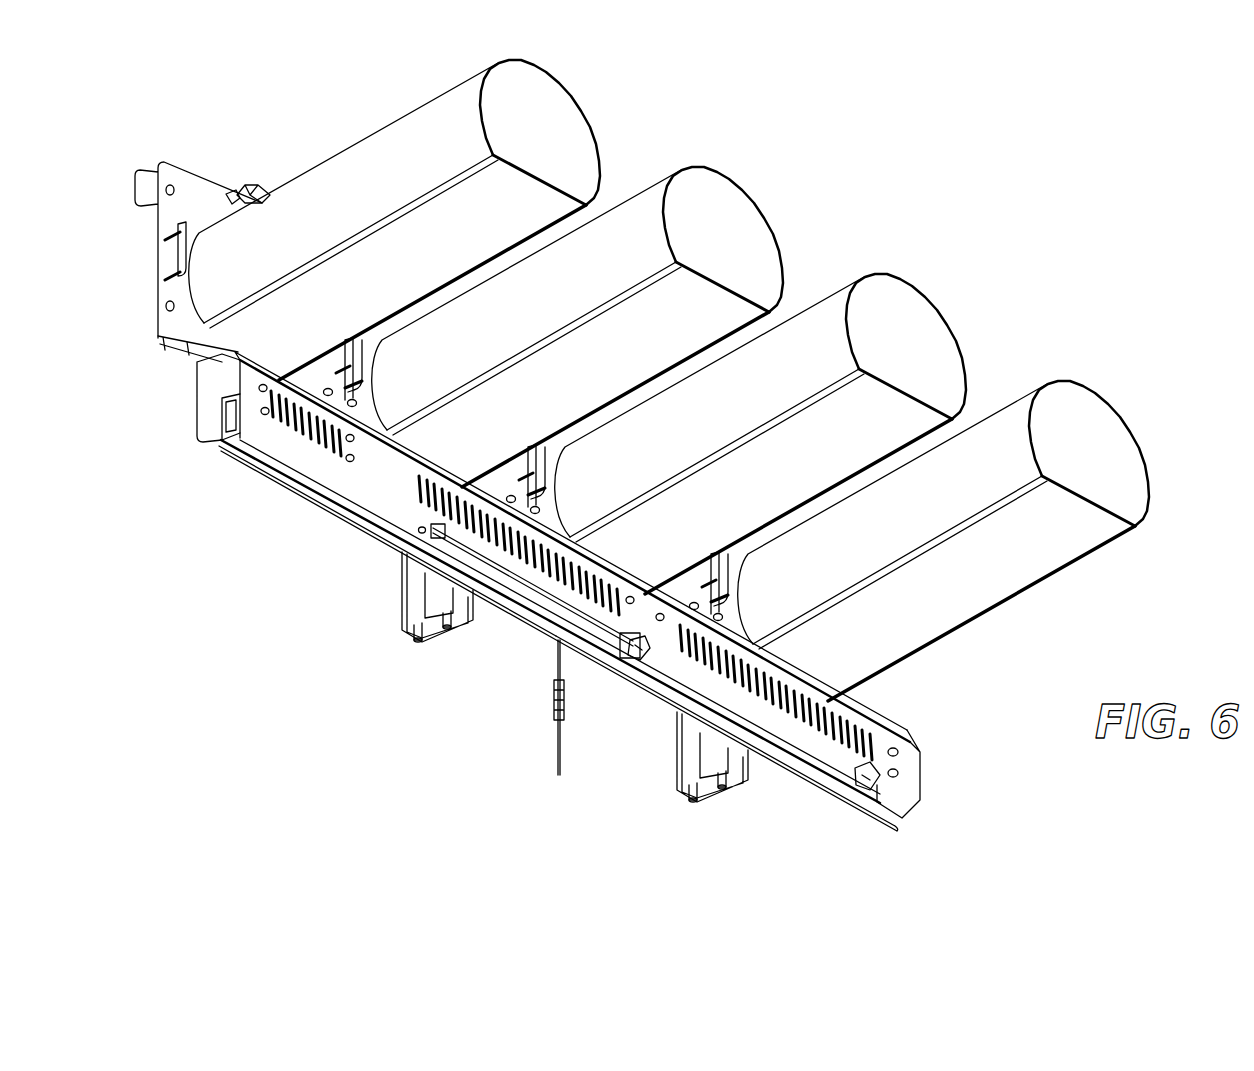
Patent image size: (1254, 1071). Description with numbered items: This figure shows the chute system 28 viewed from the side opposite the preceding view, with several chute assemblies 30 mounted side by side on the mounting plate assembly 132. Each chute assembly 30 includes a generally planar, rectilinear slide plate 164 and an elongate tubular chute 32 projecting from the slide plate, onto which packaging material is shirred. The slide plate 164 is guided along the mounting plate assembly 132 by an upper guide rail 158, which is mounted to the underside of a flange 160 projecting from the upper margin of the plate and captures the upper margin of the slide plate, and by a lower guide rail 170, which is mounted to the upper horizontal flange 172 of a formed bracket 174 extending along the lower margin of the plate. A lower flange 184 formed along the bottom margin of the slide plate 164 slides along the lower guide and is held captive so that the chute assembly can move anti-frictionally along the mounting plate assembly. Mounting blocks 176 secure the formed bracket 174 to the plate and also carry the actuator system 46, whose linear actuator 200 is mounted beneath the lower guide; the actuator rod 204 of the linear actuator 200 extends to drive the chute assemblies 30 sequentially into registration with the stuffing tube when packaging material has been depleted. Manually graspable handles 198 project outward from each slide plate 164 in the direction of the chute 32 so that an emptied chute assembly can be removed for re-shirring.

The chute system 28 is at (910, 147).
The chute assemblies 30 is at (365, 104).
The elongate tubular chute 32 is at (480, 80).
The actuator system 46 is at (664, 745).
The mounting plate assembly 132 is at (194, 452).
The upper guide rail 158 is at (262, 188).
The flange 160 is at (232, 198).
The slide plate 164 is at (185, 182).
The lower guide rail 170 is at (912, 728).
The upper horizontal flange 172 is at (215, 406).
The formed bracket 174 is at (385, 515).
The mounting blocks 176 is at (640, 655).
The lower flange 184 is at (175, 345).
The manually graspable handles 198 is at (176, 256).
The linear actuator 200 is at (787, 732).
The actuator rod 204 is at (527, 585).